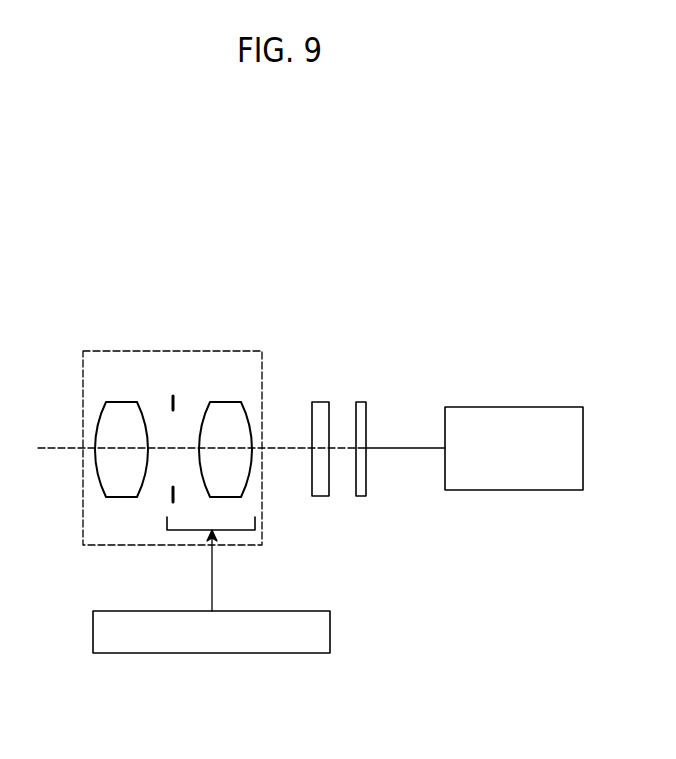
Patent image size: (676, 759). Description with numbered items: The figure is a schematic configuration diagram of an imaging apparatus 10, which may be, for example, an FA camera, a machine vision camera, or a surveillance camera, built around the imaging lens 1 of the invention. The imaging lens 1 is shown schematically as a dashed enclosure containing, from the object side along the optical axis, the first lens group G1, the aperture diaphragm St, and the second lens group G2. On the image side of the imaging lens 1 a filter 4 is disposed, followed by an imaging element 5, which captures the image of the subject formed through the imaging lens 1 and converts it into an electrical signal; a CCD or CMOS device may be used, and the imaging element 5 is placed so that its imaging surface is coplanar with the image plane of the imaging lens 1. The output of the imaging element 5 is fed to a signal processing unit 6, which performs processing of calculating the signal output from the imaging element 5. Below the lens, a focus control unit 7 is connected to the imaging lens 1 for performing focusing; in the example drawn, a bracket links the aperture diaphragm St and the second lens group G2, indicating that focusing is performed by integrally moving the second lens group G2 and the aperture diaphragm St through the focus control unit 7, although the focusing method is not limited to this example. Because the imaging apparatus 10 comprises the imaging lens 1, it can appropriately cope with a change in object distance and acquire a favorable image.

The imaging lens 1 is at (83, 520).
The filter 4 is at (318, 402).
The imaging element 5 is at (361, 402).
The signal processing unit 6 is at (553, 407).
The focus control unit 7 is at (300, 611).
The imaging apparatus 10 is at (328, 296).
The first lens group G1 is at (116, 399).
The aperture diaphragm St is at (173, 395).
The second lens group G2 is at (217, 399).